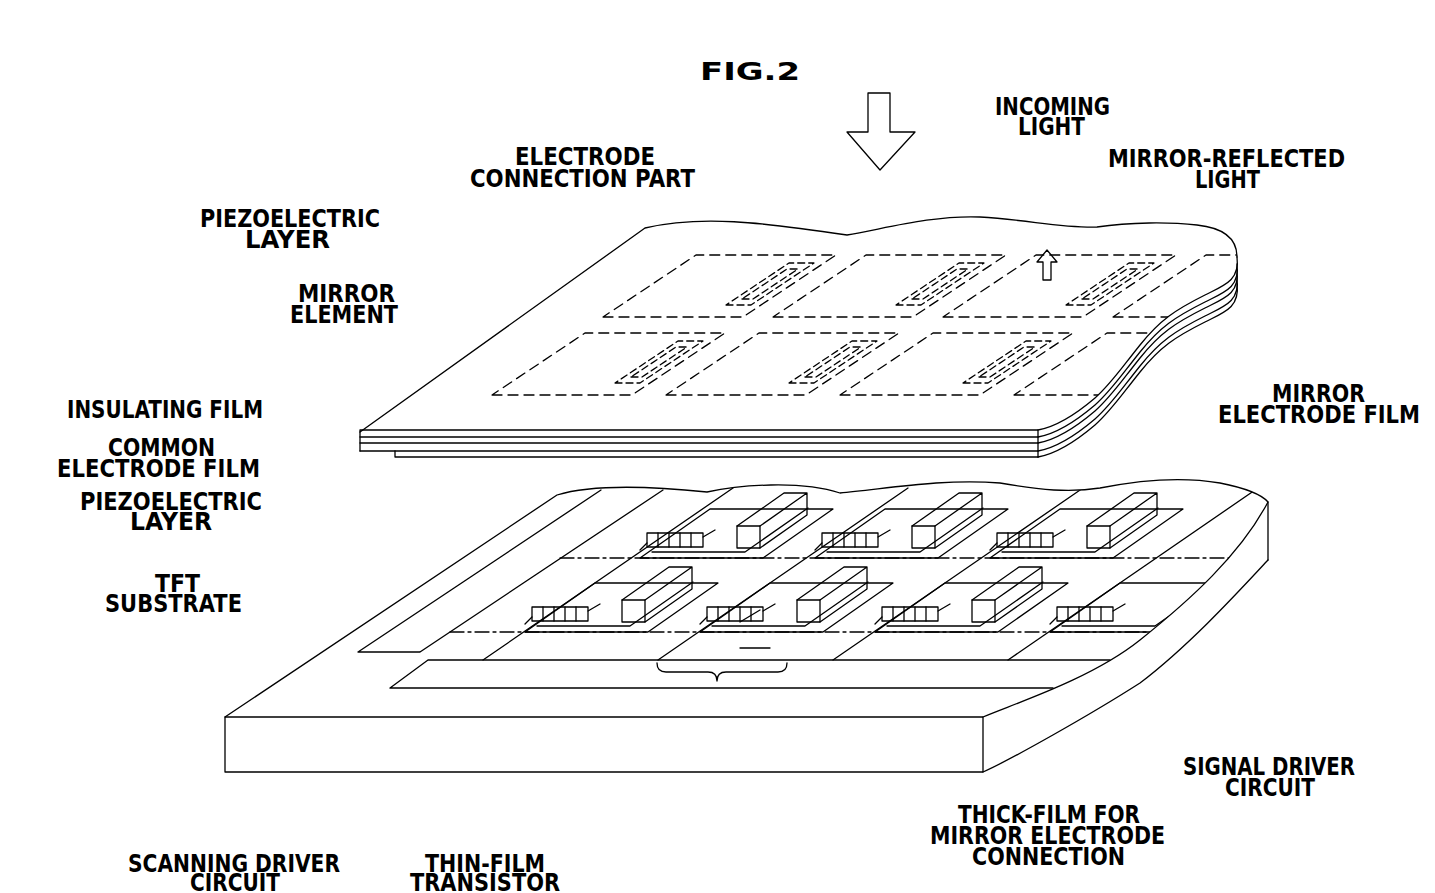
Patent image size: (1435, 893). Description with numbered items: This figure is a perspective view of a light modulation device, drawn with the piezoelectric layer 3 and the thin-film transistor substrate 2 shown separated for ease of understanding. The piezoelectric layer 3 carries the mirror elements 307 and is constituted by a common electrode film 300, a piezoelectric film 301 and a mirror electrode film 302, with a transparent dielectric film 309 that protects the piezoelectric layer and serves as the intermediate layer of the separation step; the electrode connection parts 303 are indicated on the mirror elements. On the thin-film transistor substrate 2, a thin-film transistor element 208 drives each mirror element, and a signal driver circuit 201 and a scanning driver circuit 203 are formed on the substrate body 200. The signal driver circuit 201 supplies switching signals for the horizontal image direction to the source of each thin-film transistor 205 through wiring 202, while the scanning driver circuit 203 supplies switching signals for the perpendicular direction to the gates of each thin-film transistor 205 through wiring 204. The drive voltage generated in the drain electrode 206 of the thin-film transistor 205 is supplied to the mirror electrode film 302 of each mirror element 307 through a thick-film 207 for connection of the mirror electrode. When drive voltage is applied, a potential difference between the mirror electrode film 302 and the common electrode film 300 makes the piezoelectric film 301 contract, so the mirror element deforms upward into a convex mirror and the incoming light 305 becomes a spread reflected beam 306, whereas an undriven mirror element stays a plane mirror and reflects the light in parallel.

The thin-film transistor substrate 2 is at (758, 666).
The piezoelectric layer 3 is at (487, 257).
The substrate 200 is at (1143, 663).
The signal driver circuit 201 is at (980, 680).
The wiring 202 is at (1117, 588).
The scanning driver circuit 203 is at (393, 643).
The wiring 204 is at (762, 642).
The thin-film transistor 205 is at (585, 623).
The drain electrode 206 is at (605, 624).
The thick-film for connection of the mirror electrode 207 is at (833, 607).
The thin-film transistor element 208 is at (717, 681).
The common electrode film 300 is at (360, 452).
The piezoelectric film 301 is at (412, 456).
The mirror electrode film 302 is at (1130, 385).
The electrode connection part 303 is at (763, 282).
The incoming light 305 is at (895, 110).
The reflected beam 306 is at (1062, 247).
The mirror element 307 is at (553, 367).
The transparent dielectric film 309 is at (358, 433).